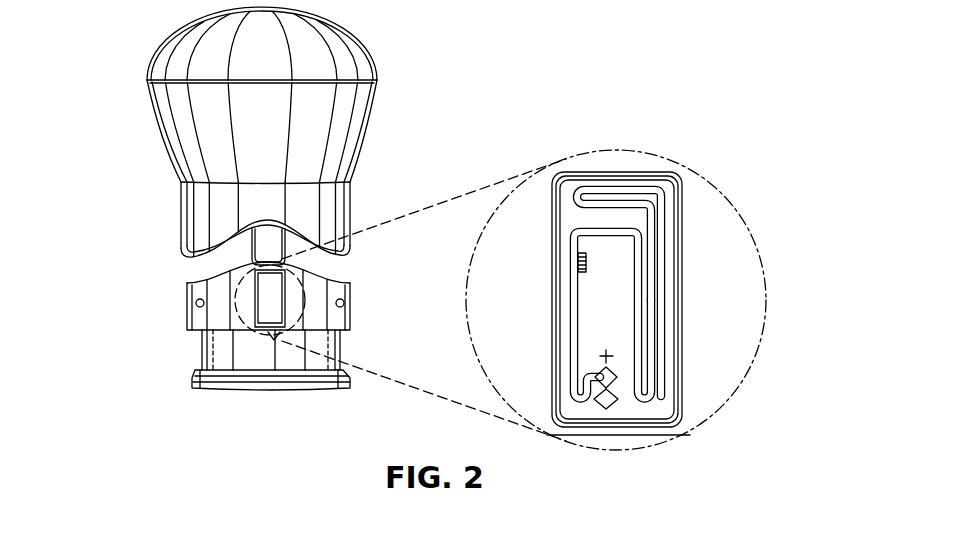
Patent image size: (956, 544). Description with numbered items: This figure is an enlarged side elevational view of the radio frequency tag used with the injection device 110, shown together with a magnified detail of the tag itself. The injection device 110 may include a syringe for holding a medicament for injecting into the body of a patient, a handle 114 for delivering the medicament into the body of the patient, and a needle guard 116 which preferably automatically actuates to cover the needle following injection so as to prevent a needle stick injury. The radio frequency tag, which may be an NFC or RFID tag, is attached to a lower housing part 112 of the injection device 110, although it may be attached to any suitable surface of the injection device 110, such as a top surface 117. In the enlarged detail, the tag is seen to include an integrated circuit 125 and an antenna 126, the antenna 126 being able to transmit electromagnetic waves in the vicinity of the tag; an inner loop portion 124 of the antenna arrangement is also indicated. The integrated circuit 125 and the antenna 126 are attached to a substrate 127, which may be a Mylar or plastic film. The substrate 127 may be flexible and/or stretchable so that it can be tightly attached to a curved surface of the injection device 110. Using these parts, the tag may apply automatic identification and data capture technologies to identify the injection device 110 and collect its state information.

The injection device 110 is at (350, 103).
The lower housing part 112 is at (188, 322).
The handle 114 is at (183, 172).
The needle guard 116 is at (200, 366).
The top surface 117 is at (167, 52).
The antenna inner loop 124 is at (632, 293).
The integrated circuit 125 is at (612, 373).
The antenna 126 is at (662, 241).
The substrate 127 is at (668, 202).